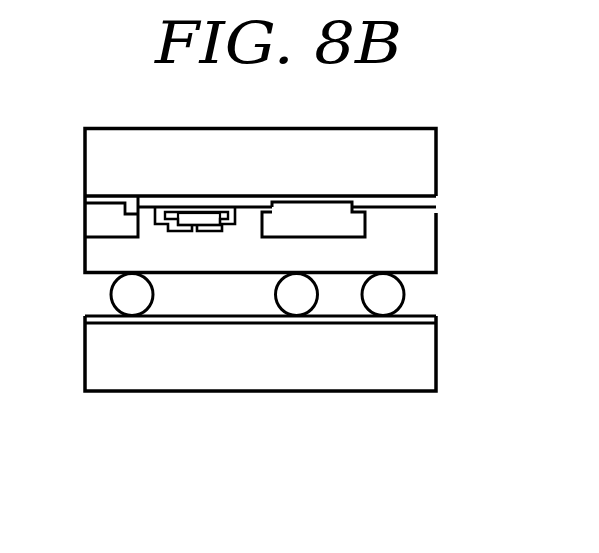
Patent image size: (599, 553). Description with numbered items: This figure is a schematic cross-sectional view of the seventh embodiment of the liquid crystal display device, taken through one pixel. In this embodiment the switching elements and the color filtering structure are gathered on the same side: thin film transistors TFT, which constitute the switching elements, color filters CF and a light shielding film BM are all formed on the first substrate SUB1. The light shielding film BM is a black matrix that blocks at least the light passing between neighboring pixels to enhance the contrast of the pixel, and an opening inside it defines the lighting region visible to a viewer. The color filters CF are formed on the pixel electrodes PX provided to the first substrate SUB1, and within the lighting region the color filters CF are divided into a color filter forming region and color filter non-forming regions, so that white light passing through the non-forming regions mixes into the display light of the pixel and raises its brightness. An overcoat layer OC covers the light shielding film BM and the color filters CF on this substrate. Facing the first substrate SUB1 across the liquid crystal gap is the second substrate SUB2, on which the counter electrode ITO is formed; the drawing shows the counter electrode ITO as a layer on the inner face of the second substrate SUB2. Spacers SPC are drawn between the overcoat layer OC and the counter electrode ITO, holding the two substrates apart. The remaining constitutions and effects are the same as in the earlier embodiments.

The first substrate SUB1 is at (430, 152).
The light shielding film BM is at (430, 205).
The pixel electrode PX is at (309, 200).
The color filter CF is at (366, 221).
The thin film transistor TFT is at (200, 238).
The overcoat layer OC is at (420, 255).
The spacer SPC is at (392, 294).
The counter electrode ITO is at (428, 318).
The second substrate SUB2 is at (110, 374).